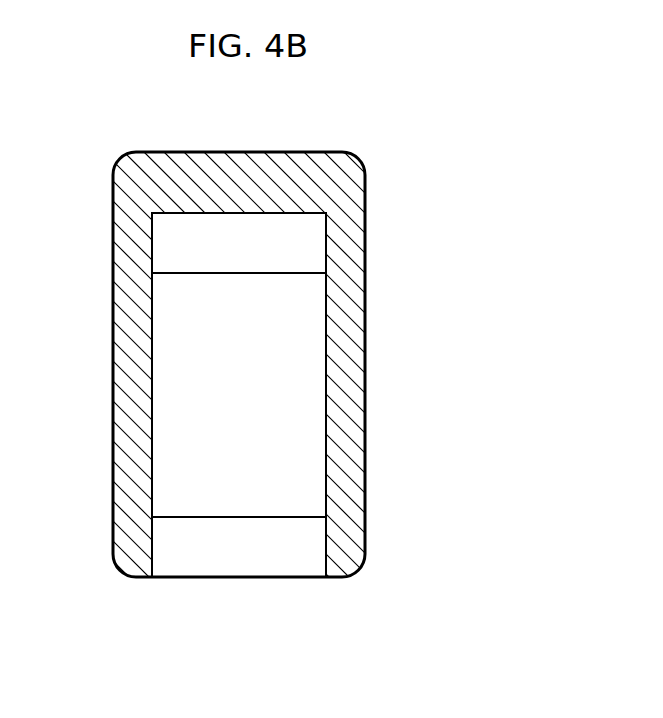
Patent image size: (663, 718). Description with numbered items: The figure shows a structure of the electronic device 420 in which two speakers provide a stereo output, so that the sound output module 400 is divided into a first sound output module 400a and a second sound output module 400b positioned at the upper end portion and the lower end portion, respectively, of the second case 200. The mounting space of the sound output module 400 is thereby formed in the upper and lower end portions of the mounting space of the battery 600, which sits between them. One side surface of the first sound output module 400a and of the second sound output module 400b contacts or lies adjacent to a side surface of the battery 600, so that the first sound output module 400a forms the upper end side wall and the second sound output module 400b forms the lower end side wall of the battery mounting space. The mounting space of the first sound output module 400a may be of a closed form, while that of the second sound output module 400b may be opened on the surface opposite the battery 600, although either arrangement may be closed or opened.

The second case 200 is at (346, 153).
The electronic device 420 is at (238, 133).
The sound output module 400 is at (448, 246).
The first sound output module 400a is at (308, 259).
The second sound output module 400b is at (308, 547).
The battery 600 is at (166, 367).